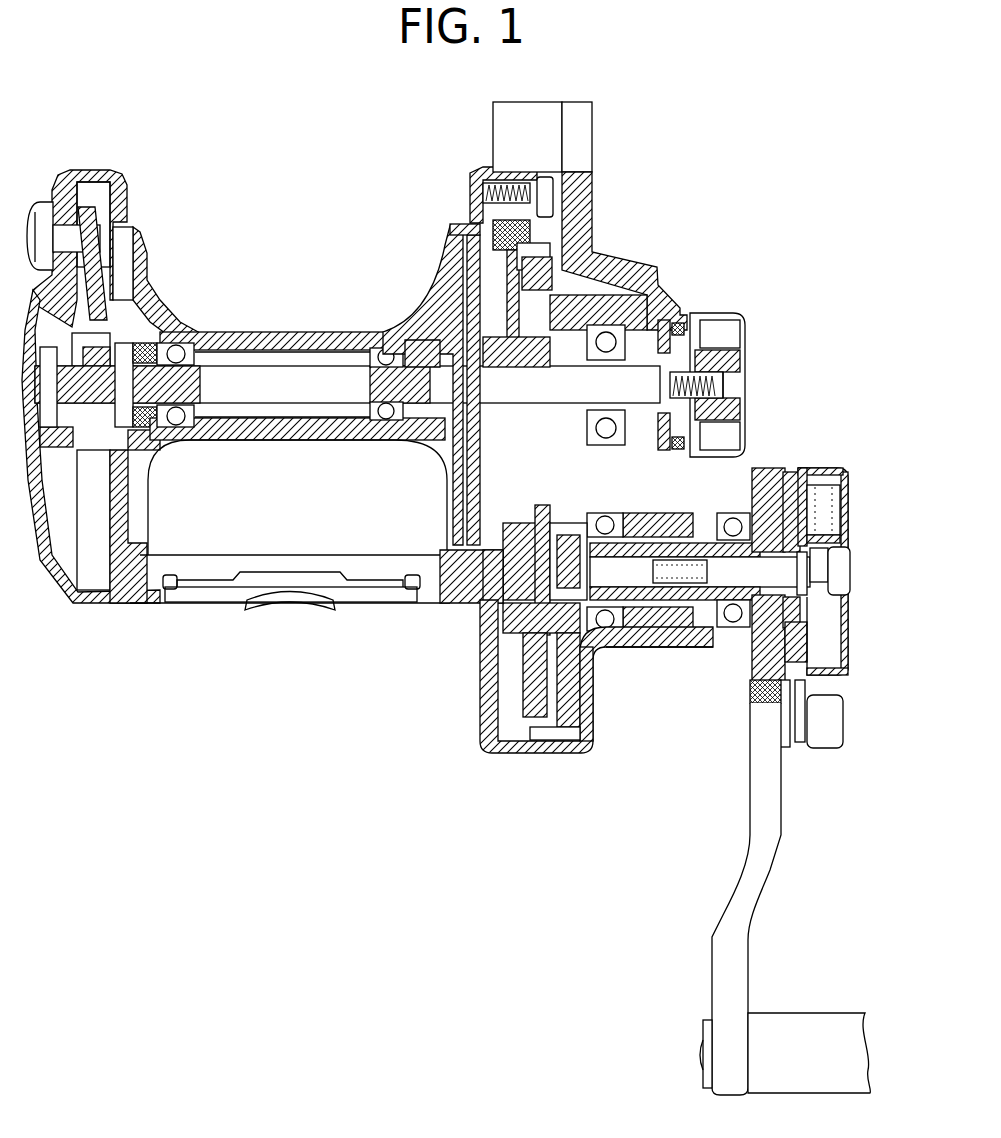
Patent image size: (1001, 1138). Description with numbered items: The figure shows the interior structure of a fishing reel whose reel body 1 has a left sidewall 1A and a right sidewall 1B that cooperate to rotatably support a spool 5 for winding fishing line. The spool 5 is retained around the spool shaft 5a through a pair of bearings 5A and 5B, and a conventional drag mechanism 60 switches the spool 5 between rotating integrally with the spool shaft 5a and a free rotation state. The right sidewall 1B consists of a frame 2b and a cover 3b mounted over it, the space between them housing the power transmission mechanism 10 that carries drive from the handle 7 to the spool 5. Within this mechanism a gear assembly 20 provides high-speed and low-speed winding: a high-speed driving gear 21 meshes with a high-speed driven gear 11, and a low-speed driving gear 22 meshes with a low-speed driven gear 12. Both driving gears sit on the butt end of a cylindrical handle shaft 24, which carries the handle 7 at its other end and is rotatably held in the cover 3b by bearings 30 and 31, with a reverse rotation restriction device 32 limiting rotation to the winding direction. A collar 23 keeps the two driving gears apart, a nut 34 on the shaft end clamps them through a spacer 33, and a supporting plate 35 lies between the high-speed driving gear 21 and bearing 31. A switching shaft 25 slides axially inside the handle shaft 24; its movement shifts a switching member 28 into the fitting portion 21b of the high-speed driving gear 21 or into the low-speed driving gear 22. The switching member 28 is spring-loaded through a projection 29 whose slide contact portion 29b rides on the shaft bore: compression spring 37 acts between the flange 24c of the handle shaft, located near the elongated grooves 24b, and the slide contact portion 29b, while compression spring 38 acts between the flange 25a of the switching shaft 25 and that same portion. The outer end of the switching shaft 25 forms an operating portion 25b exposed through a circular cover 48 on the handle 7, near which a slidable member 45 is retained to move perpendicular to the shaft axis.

The reel body 1 is at (160, 178).
The left sidewall 1A is at (90, 168).
The right sidewall 1B is at (480, 172).
The frame 2b is at (487, 698).
The cover 3b is at (567, 747).
The spool 5 is at (297, 333).
The spool shaft 5a is at (298, 427).
The bearing 5A is at (185, 345).
The bearing 5B is at (388, 345).
The handle 7 is at (763, 750).
The power transmission mechanism 10 is at (498, 637).
The high-speed driven gear 11 is at (573, 353).
The low-speed driven gear 12 is at (537, 343).
The gear assembly 20 is at (622, 662).
The high-speed driving gear 21 is at (580, 733).
The fitting portion 21b is at (683, 337).
The low-speed driving gear 22 is at (533, 713).
The collar 23 is at (522, 693).
The handle shaft 24 is at (620, 533).
The elongated grooves 24b is at (566, 725).
The flange 24c is at (665, 632).
The switching shaft 25 is at (837, 490).
The flange 25a is at (777, 700).
The operating portion 25b is at (843, 565).
The switching member 28 is at (477, 553).
The projection 29 is at (672, 606).
The slide contact portion 29b is at (810, 633).
The bearing 30 is at (790, 482).
The bearing 31 is at (672, 522).
The reverse rotation restriction device 32 is at (702, 530).
The spacer 33 is at (500, 532).
The nut 34 is at (493, 610).
The supporting plate 35 is at (626, 628).
The compression spring 37 is at (690, 535).
The compression spring 38 is at (727, 628).
The slidable member 45 is at (807, 610).
The circular cover 48 is at (848, 638).
The drag mechanism 60 is at (628, 236).